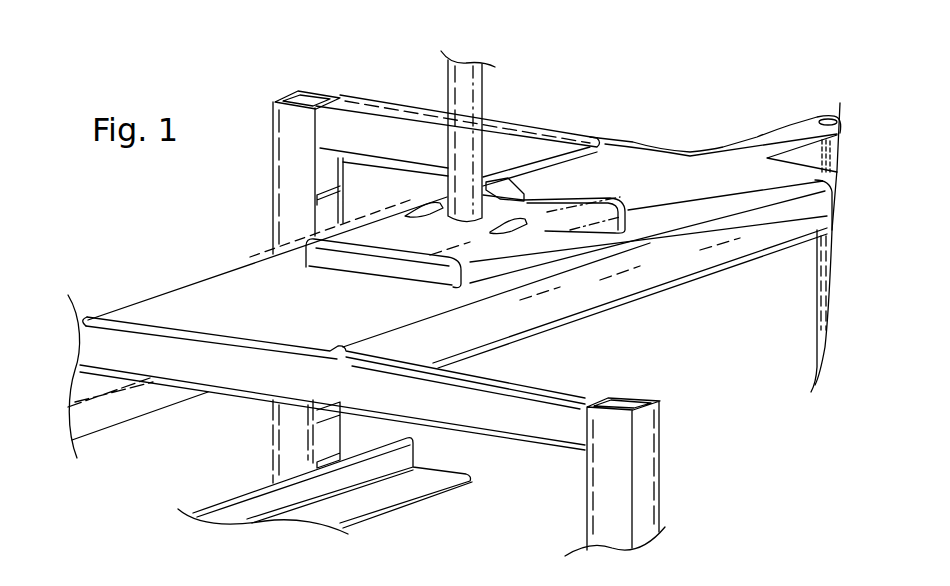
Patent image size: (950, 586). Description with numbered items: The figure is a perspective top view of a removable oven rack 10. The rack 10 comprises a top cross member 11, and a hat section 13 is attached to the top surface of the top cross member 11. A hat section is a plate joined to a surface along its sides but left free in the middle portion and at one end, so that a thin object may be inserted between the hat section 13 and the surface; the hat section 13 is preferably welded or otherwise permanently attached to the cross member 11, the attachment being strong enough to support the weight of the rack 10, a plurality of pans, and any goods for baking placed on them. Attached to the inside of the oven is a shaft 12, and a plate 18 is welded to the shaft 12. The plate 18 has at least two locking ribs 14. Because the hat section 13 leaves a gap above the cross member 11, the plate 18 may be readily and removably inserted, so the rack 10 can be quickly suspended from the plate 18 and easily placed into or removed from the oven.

The removable oven rack 10 is at (762, 88).
The top cross member 11 is at (723, 195).
The shaft 12 is at (483, 100).
The hat section 13 is at (628, 207).
The locking ribs 14 is at (425, 203).
The plate 18 is at (420, 276).